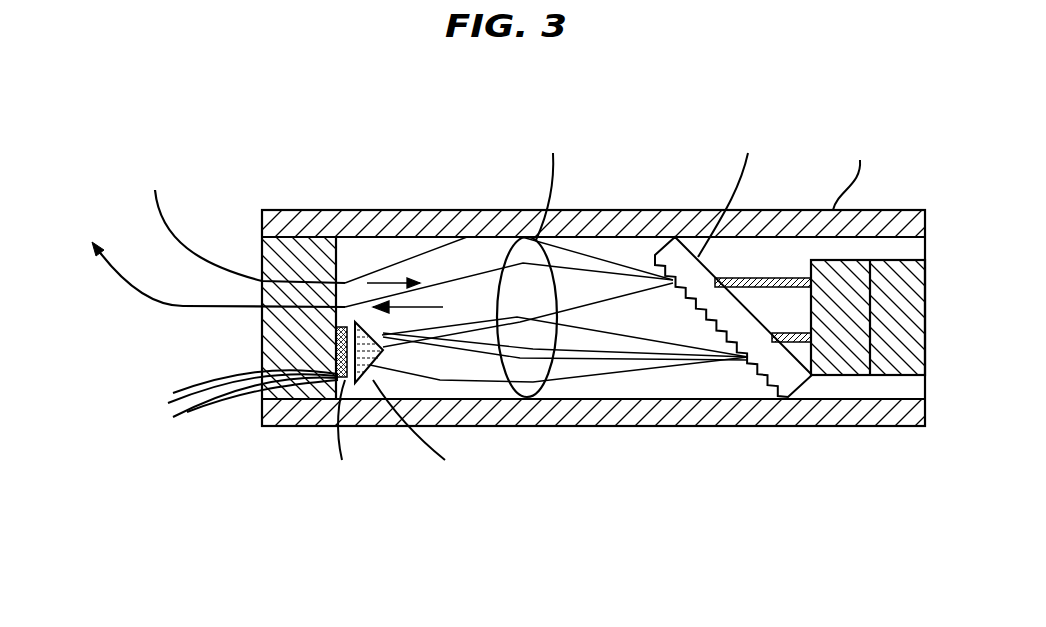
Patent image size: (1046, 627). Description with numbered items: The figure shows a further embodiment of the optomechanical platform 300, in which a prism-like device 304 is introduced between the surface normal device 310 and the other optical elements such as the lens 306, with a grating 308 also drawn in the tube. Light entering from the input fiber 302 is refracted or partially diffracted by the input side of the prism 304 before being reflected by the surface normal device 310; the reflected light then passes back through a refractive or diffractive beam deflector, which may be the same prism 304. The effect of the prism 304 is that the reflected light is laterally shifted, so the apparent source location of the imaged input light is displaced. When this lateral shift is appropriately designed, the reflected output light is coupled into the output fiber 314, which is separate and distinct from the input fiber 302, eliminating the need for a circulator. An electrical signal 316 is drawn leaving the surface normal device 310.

The optical monitoring assembly (tube) 300 is at (503, 87).
The input fiber 302 is at (170, 230).
The prism 304 is at (356, 320).
The lens 306 is at (515, 250).
The grating 308 is at (662, 252).
The surface normal device 310 is at (337, 378).
The output fiber 314 is at (117, 282).
The electrical signal 316 is at (190, 413).